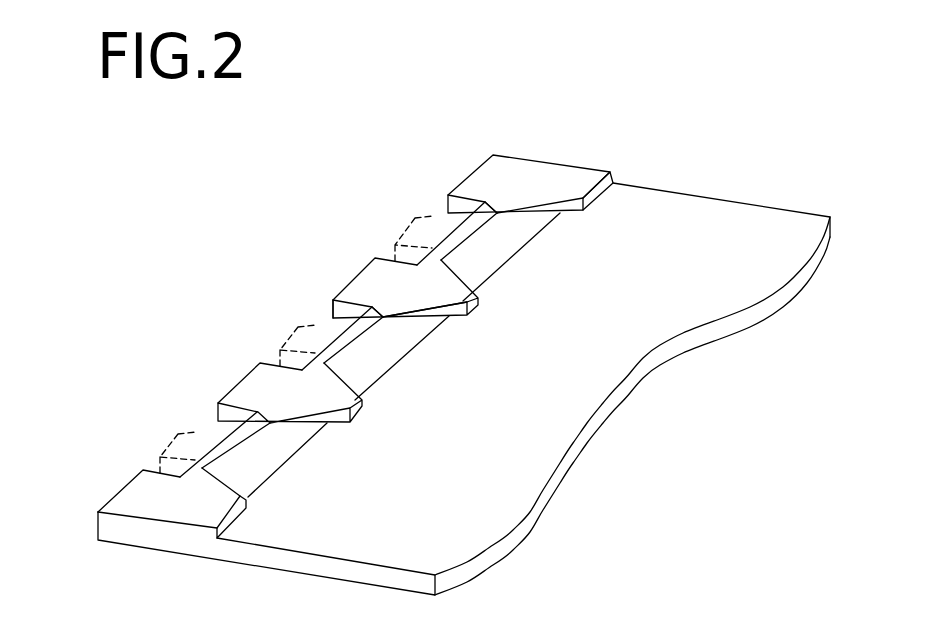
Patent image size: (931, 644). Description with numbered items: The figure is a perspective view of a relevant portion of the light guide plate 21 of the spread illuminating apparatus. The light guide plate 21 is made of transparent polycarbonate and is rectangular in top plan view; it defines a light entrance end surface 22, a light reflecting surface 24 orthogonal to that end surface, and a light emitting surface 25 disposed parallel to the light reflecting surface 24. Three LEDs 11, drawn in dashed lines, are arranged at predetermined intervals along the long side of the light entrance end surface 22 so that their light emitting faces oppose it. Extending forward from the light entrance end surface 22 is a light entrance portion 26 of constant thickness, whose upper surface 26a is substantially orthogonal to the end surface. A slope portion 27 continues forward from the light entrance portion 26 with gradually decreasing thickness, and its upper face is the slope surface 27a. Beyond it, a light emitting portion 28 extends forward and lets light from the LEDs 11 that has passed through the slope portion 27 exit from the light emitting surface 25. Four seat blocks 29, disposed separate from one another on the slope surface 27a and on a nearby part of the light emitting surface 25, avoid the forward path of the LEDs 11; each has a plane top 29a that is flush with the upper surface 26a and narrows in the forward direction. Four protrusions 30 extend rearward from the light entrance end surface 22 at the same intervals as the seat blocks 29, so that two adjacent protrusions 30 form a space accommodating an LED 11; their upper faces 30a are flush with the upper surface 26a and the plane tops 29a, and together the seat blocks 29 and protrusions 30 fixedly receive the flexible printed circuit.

The light guide plate 21 is at (752, 78).
The light entrance end surface 22 is at (265, 418).
The light reflecting surface 24 is at (490, 518).
The light emitting surface 25 is at (537, 438).
The light entrance portion 26 is at (333, 318).
The upper surface 26a is at (337, 332).
The slope portion 27 is at (517, 230).
The slope surface 27a is at (448, 208).
The light emitting portion 28 is at (712, 228).
The seat block 29 is at (552, 177).
The plane top 29a is at (583, 176).
The protrusion 30 is at (495, 156).
The upper face 30a is at (497, 168).
The LED 11 is at (415, 218).